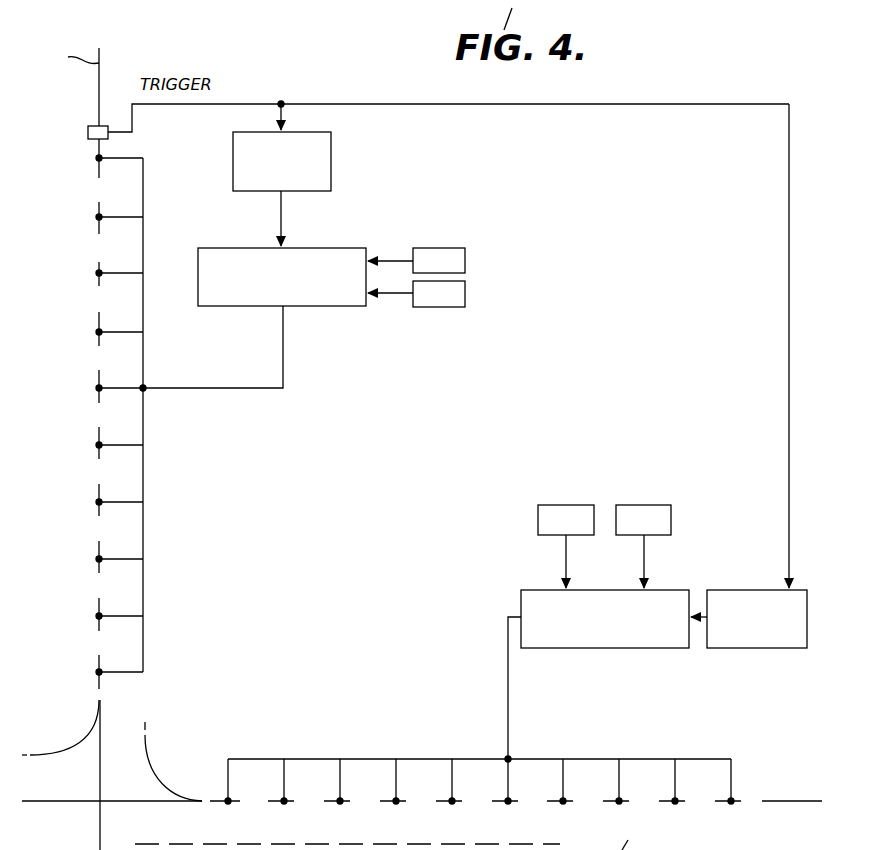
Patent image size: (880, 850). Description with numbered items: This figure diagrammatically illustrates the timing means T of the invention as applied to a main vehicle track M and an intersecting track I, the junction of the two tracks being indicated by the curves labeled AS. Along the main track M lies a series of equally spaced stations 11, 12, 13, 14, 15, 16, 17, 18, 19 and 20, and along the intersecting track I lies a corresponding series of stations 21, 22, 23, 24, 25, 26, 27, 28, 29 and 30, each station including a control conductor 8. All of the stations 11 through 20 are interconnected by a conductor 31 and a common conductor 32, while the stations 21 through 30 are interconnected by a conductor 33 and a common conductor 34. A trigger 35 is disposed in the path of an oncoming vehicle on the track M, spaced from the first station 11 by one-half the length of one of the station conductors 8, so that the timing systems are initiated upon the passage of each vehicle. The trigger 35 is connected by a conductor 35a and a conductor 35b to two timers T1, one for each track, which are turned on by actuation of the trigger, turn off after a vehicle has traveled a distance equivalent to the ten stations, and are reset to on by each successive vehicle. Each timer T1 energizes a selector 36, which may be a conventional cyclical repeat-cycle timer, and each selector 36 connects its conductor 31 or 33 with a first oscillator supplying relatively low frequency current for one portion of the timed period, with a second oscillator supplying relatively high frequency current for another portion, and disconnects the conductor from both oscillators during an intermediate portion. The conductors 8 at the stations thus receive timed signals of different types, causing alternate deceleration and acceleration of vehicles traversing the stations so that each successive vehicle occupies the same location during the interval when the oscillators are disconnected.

The control conductor 8 is at (99, 147).
The station 11 is at (99, 158).
The station 12 is at (99, 217).
The station 13 is at (99, 273).
The station 14 is at (99, 332).
The station 15 is at (99, 388).
The station 16 is at (99, 445).
The station 17 is at (99, 502).
The station 18 is at (99, 559).
The station 19 is at (99, 616).
The station 20 is at (99, 672).
The station 21 is at (719, 801).
The station 22 is at (663, 801).
The station 23 is at (607, 801).
The station 24 is at (551, 801).
The station 25 is at (496, 801).
The station 26 is at (439, 801).
The station 27 is at (383, 801).
The station 28 is at (326, 801).
The station 29 is at (272, 801).
The station 30 is at (212, 801).
The conductor 31 is at (283, 388).
The common conductor 32 is at (143, 360).
The conductor 33 is at (508, 703).
The common conductor 34 is at (355, 759).
The trigger 35 is at (88, 131).
The conductor 35a is at (172, 104).
The conductor 35b is at (789, 323).
The selector 36 is at (355, 248).
The main vehicle track M is at (73, 85).
The curve AS is at (68, 760).
The timing means T is at (484, 712).
The timer T1 is at (331, 165).
The intersecting track I is at (765, 801).